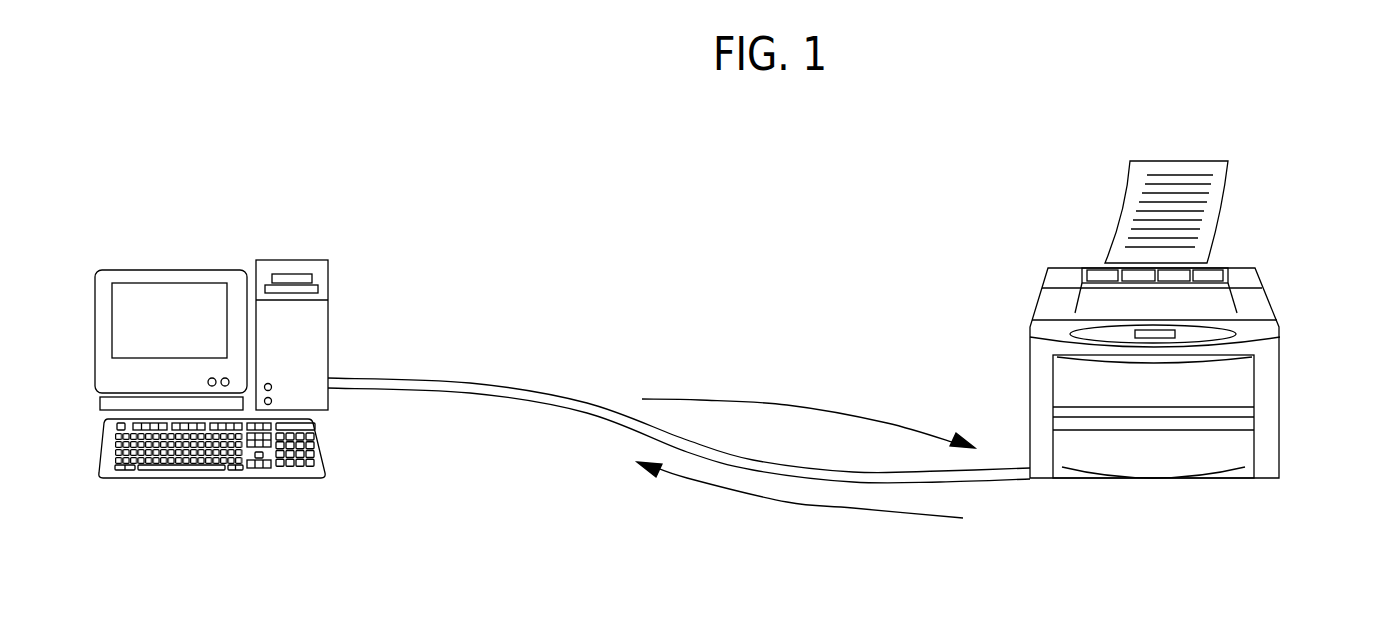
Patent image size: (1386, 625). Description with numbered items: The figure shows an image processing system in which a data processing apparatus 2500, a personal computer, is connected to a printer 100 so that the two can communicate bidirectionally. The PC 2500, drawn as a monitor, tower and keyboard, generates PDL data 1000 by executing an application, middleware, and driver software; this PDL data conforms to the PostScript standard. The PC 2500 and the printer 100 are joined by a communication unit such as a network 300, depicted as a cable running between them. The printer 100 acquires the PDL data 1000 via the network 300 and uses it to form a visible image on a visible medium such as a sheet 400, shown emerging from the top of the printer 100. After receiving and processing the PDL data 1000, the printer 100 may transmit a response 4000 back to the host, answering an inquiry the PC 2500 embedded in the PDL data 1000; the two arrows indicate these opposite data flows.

The printer 100 is at (1282, 404).
The network 300 is at (418, 392).
The sheet 400 is at (1222, 208).
The PDL data 1000 is at (802, 405).
The data processing apparatus 2500 is at (330, 277).
The response 4000 is at (805, 507).